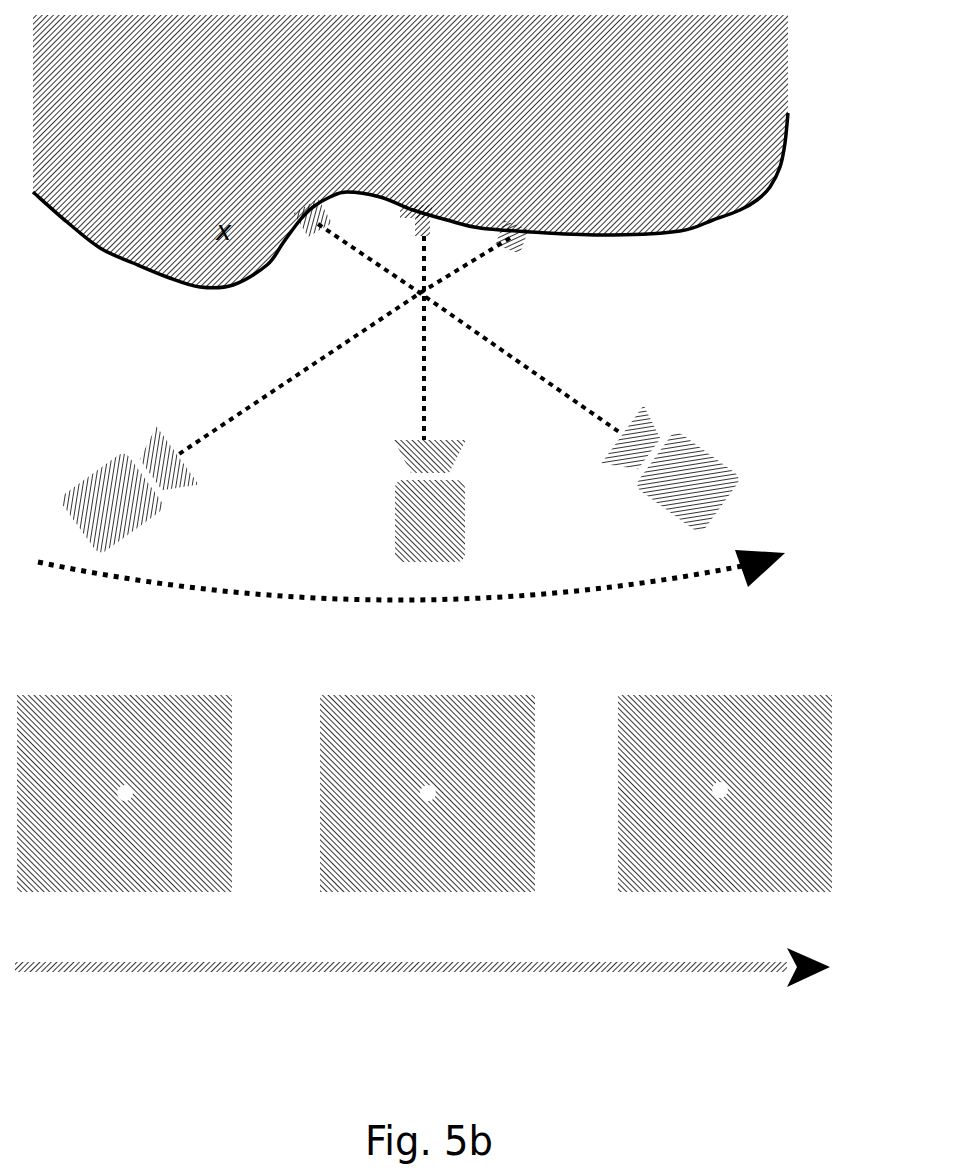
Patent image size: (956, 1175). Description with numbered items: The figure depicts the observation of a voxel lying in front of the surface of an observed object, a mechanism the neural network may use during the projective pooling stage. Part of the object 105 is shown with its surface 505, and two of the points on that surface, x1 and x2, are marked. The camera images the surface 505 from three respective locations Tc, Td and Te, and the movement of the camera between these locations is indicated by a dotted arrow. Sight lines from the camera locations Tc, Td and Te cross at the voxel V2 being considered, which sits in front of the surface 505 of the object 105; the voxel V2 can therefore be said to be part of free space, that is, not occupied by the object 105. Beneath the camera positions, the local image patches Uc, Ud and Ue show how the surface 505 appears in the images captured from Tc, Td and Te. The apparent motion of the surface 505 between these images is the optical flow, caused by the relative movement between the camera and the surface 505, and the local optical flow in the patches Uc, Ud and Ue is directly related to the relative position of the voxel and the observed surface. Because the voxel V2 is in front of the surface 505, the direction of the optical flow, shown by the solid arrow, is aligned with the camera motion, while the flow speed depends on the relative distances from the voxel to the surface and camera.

The object 105 is at (707, 147).
The surface 505 is at (678, 232).
The camera location Tc is at (127, 510).
The camera location Td is at (443, 510).
The camera location Te is at (710, 482).
The local image patch Uc is at (124, 823).
The local image patch Ud is at (427, 823).
The local image patch Ue is at (725, 823).
The point on surface x1 is at (534, 257).
The point on surface x2 is at (433, 201).
The voxel V2 is at (399, 327).